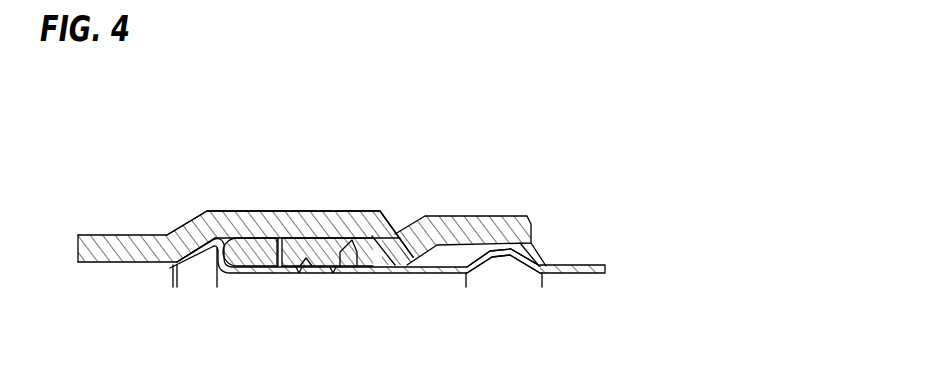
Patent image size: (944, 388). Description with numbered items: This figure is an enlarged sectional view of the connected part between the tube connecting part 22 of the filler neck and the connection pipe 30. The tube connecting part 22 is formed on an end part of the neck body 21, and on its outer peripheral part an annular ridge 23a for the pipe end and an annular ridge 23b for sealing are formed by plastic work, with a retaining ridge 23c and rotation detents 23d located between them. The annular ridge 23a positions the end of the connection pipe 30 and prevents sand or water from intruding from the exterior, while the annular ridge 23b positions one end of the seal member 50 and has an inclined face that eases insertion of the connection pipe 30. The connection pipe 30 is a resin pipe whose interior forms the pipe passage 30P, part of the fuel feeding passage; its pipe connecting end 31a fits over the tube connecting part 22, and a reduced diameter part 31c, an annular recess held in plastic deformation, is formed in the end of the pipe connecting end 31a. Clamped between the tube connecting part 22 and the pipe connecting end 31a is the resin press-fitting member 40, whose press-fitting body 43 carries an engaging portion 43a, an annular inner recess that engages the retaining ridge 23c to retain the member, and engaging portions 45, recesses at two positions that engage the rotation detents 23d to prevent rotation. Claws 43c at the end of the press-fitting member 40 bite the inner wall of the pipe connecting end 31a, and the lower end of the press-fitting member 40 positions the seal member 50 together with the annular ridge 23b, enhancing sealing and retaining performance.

The connection pipe 30 is at (133, 233).
The pipe passage 30P is at (140, 314).
The seal member 50 is at (207, 220).
The pipe connecting end 31a is at (237, 211).
The reduced diameter part 31c is at (398, 235).
The press-fitting member 40 is at (293, 211).
The engaging portions 45 is at (310, 211).
The press-fitting body 43 is at (325, 211).
The engaging portion 43a is at (351, 211).
The claws 43c is at (382, 212).
The neck body 21 is at (604, 265).
The tube connecting part 22 is at (267, 274).
The annular ridge for pipe end 23a is at (518, 253).
The annular ridge for sealing 23b is at (212, 262).
The retaining ridge 23c is at (334, 274).
The rotation detents 23d is at (299, 274).